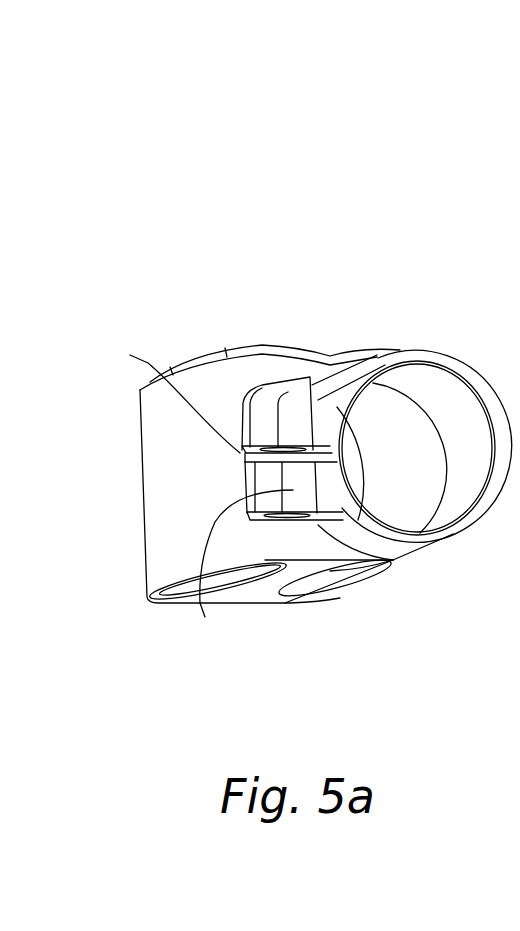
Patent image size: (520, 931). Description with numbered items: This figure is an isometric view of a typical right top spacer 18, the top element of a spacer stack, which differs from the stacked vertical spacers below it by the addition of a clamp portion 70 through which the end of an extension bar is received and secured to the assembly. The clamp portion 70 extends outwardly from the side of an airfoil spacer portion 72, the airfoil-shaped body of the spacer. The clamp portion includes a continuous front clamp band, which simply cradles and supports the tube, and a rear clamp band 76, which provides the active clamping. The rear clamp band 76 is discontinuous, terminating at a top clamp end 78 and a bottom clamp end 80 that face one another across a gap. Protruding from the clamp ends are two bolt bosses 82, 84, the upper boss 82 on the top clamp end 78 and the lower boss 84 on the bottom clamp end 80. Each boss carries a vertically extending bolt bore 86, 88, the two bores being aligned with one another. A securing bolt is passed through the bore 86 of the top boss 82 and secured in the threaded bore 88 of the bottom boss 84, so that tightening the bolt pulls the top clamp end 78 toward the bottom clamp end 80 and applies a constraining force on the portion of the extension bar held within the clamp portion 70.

The top spacer 18 is at (206, 233).
The clamp portion 70 is at (453, 347).
The airfoil spacer portion 72 is at (120, 535).
The rear clamp band 76 is at (418, 352).
The top clamp end 78 is at (308, 400).
The bottom clamp end 80 is at (315, 465).
The bolt boss 82 is at (277, 403).
The bolt boss 84 is at (205, 617).
The bolt bore 86 is at (148, 363).
The bolt bore 88 is at (277, 465).